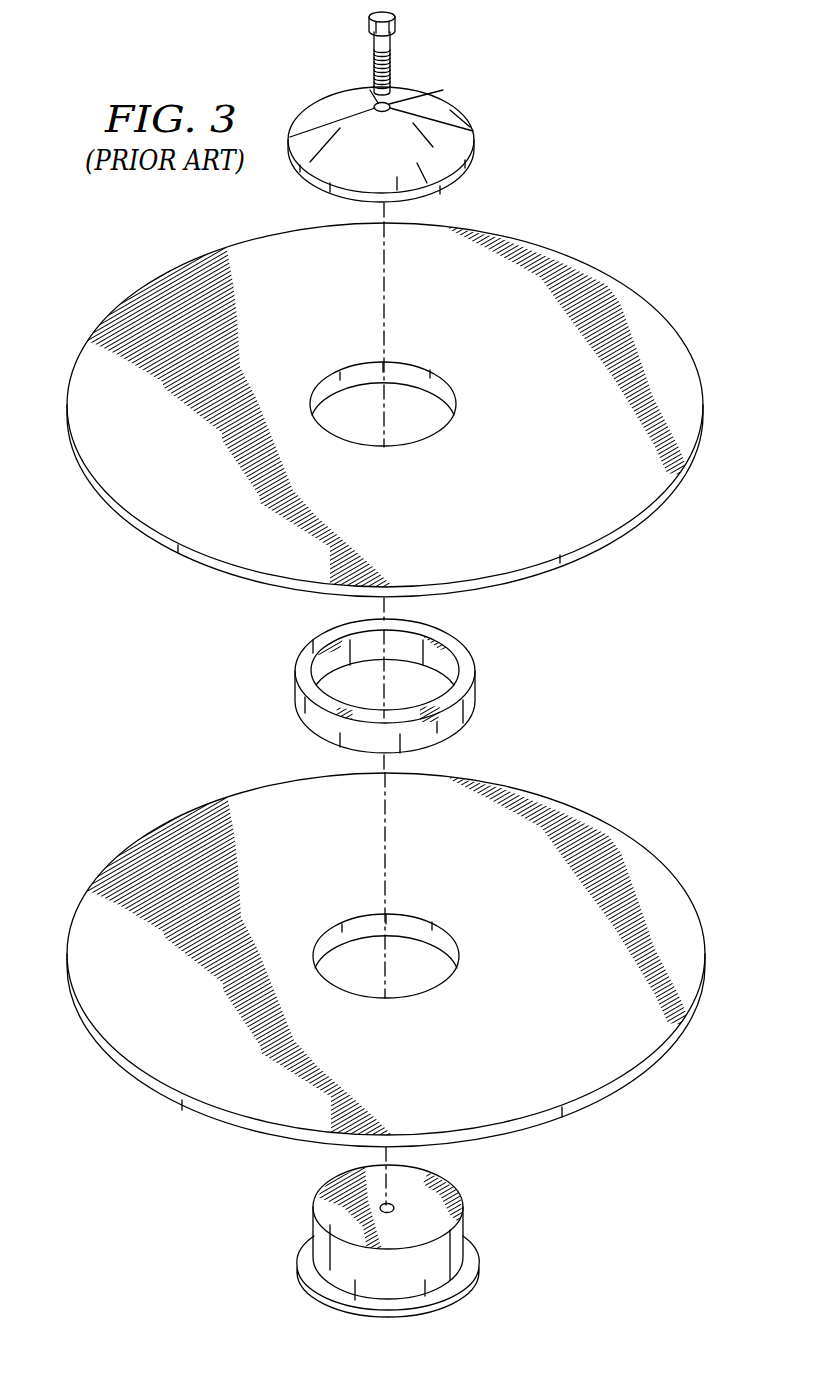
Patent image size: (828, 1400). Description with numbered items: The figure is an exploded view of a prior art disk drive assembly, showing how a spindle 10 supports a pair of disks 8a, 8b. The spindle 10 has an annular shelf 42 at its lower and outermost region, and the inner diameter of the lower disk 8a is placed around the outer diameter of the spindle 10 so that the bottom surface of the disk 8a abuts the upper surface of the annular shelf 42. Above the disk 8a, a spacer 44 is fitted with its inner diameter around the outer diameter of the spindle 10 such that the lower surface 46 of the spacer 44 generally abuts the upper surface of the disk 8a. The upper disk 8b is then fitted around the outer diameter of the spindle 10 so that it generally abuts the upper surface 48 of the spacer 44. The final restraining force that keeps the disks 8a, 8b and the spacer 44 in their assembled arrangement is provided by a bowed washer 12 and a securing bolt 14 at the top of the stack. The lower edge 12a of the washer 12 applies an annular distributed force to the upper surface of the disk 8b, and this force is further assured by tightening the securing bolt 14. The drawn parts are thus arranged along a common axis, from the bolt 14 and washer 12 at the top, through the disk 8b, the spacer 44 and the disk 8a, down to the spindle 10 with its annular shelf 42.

The securing bolt 14 is at (395, 20).
The bowed washer 12 is at (322, 100).
The lower edge of washer 12a is at (462, 173).
The disk 8b is at (664, 336).
The spacer 44 is at (475, 693).
The upper surface of spacer 48 is at (463, 655).
The lower surface of spacer 46 is at (307, 732).
The disk 8a is at (671, 887).
The spindle 10 is at (462, 1224).
The annular shelf 42 is at (303, 1252).